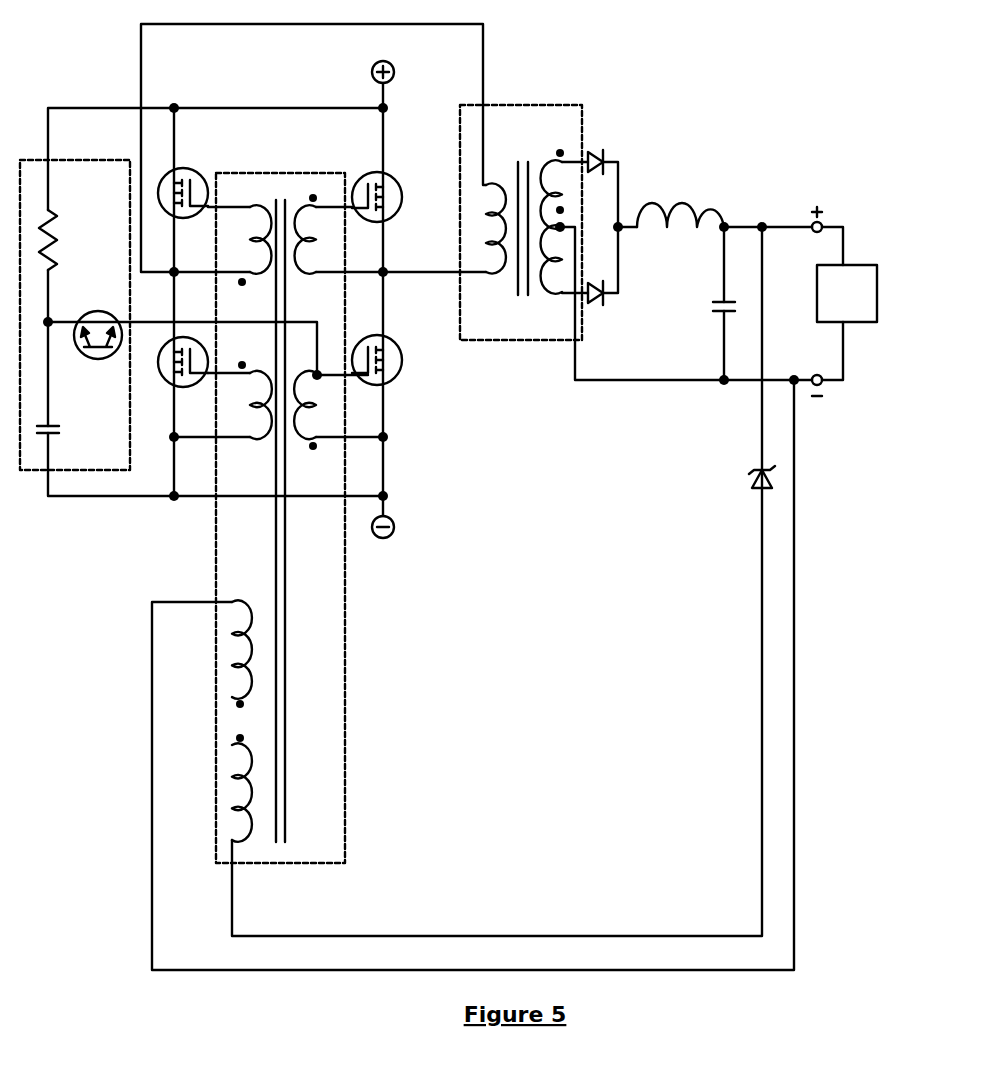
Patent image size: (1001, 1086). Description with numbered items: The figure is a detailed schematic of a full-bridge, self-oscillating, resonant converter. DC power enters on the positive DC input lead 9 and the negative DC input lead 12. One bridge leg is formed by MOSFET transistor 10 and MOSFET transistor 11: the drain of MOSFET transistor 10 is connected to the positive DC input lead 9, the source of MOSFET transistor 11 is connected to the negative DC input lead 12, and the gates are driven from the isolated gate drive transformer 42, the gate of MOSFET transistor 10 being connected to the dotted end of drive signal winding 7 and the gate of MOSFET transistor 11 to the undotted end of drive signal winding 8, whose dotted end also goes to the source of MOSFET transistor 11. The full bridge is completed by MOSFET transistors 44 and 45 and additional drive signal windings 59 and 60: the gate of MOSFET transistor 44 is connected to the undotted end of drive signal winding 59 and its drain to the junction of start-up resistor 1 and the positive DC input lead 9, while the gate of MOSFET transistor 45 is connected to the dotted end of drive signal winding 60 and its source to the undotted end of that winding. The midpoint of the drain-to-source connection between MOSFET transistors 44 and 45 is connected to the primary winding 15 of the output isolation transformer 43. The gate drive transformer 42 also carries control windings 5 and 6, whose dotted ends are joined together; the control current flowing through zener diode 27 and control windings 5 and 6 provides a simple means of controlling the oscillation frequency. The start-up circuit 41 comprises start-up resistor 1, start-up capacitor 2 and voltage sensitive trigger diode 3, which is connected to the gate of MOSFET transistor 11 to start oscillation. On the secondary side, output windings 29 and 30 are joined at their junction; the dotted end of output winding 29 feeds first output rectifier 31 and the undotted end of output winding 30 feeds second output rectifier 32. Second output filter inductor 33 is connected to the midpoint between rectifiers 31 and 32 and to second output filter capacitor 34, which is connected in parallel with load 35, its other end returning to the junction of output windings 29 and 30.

The start-up resistor 1 is at (58, 209).
The start-up capacitor 2 is at (54, 425).
The voltage sensitive trigger diode 3 is at (100, 312).
The control winding 5 is at (245, 636).
The control winding 6 is at (245, 782).
The drive signal winding 7 is at (300, 216).
The drive signal winding 8 is at (300, 382).
The positive DC input lead 9 is at (394, 70).
The MOSFET transistor 10 is at (400, 200).
The MOSFET transistor 11 is at (401, 366).
The negative DC input lead 12 is at (394, 532).
The primary winding 15 is at (489, 188).
The zener diode 27 is at (757, 488).
The output winding 29 is at (546, 160).
The output winding 30 is at (553, 296).
The first output rectifier 31 is at (598, 150).
The second output rectifier 32 is at (596, 302).
The second output filter inductor 33 is at (682, 200).
The second output filter capacitor 34 is at (718, 310).
The load 35 is at (850, 265).
The oscillator/trigger circuit 41 is at (82, 161).
The isolated gate drive transformer 42 is at (258, 173).
The output isolation transformer 43 is at (507, 108).
The MOSFET transistor 44 is at (190, 168).
The MOSFET transistor 45 is at (171, 384).
The drive signal winding 59 is at (255, 222).
The drive signal winding 60 is at (255, 388).